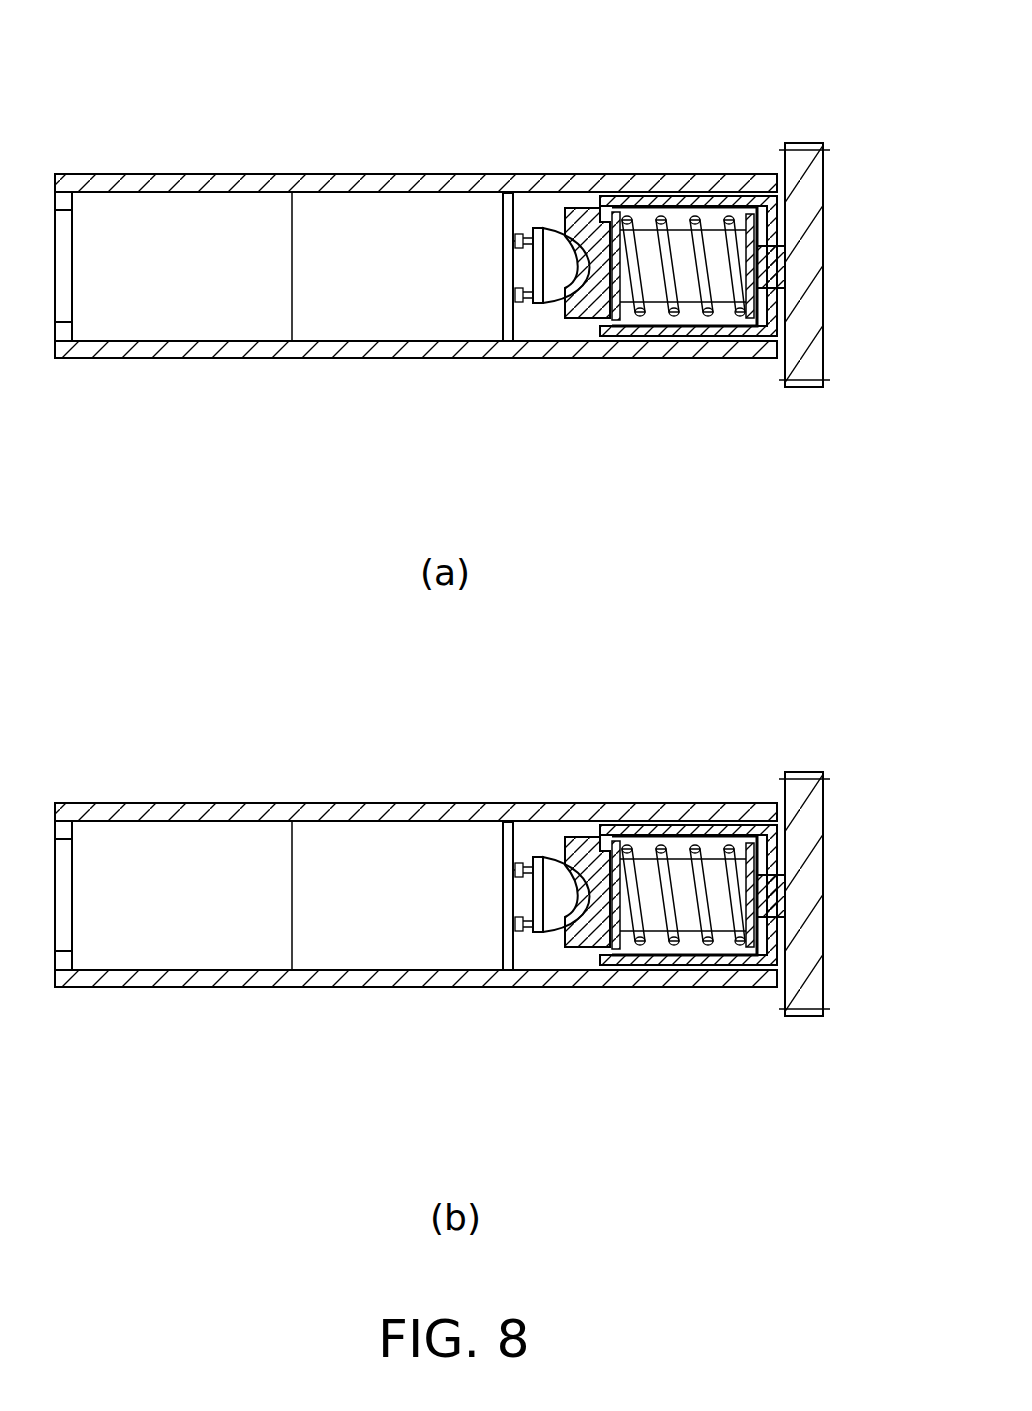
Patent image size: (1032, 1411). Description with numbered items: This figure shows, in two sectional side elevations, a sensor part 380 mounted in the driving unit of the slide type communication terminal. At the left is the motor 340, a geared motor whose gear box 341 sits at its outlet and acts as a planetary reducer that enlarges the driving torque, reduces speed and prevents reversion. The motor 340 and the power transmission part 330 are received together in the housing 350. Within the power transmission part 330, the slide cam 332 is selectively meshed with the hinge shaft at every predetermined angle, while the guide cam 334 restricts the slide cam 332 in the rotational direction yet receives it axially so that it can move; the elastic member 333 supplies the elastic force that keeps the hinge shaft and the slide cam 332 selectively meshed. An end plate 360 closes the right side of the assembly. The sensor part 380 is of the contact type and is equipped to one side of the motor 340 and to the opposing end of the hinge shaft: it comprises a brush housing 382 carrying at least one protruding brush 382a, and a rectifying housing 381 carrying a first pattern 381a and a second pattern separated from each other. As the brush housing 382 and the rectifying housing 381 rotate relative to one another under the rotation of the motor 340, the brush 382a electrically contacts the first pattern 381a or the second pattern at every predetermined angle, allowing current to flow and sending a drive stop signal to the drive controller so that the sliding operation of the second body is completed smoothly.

The power transmission part 330 is at (823, 66).
The slide cam 332 is at (636, 198).
The elastic member 333 is at (710, 230).
The guide cam 334 is at (745, 197).
The motor 340 is at (143, 320).
The gear box 341 is at (372, 322).
The housing 350 is at (223, 350).
The end plate 360 is at (815, 172).
The sensor part 380 is at (642, 438).
The rectifying housing 381 is at (513, 238).
The first pattern 381a is at (515, 292).
The brush housing 382 is at (537, 302).
The brush 382a is at (541, 230).